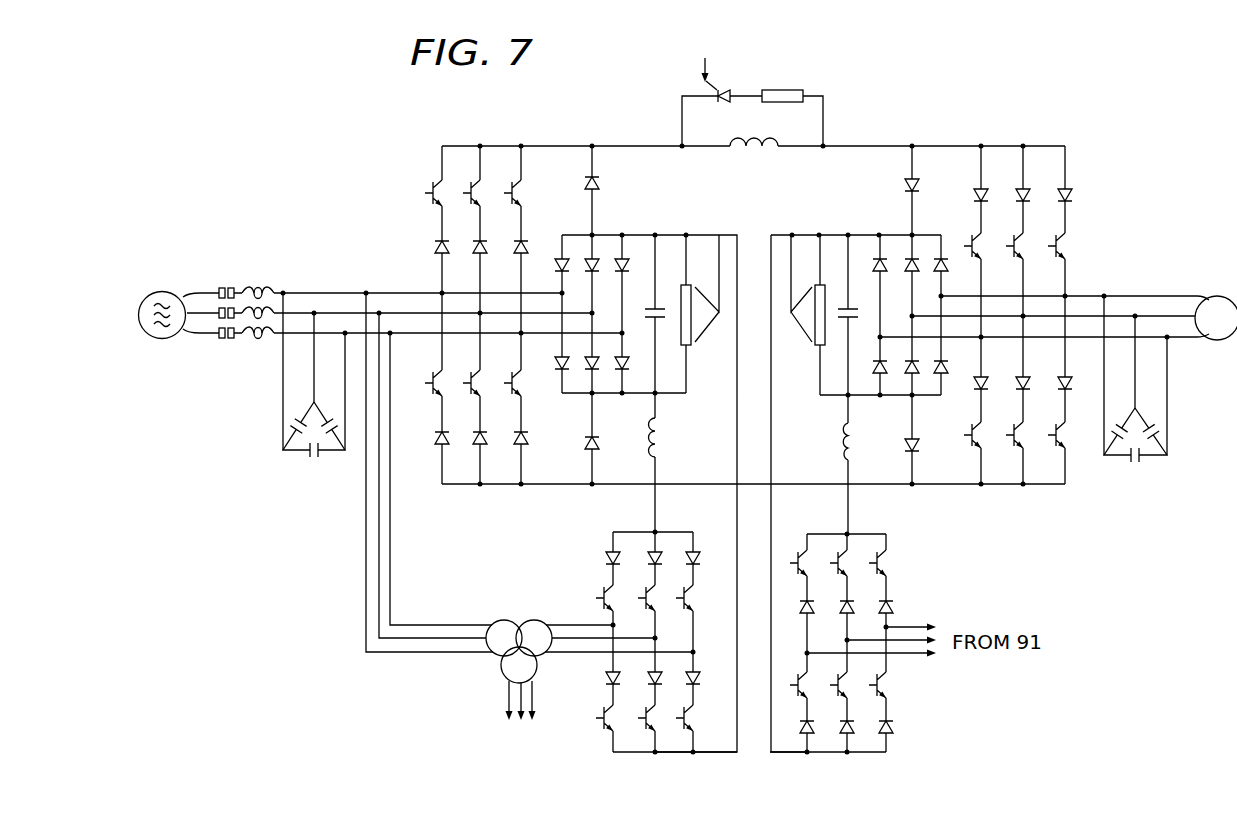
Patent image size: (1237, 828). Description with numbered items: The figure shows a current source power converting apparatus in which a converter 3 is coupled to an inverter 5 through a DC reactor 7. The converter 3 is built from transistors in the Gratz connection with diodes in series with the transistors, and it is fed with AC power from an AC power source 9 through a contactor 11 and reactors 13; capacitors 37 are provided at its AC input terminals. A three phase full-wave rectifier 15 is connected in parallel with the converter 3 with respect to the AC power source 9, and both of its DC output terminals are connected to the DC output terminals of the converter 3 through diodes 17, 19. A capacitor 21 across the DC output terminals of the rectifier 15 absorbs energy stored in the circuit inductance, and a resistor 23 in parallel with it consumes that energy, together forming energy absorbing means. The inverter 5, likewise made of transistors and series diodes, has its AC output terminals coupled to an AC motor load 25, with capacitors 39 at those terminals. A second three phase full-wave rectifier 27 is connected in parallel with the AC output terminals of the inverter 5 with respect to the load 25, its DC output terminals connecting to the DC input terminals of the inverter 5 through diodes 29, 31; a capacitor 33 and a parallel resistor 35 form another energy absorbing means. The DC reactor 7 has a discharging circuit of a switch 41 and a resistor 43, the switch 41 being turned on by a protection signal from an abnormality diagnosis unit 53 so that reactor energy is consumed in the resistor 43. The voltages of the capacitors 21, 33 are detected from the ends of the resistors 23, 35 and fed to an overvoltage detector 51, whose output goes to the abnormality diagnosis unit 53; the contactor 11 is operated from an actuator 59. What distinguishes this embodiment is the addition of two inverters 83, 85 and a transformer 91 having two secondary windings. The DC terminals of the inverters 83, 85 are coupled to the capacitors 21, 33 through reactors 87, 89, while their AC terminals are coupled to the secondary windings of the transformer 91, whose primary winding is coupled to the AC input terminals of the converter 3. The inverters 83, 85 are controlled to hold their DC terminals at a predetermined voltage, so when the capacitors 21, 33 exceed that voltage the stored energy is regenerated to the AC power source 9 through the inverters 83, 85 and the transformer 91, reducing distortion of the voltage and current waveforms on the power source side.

The converter 3 is at (469, 511).
The inverter 5 is at (1043, 519).
The DC reactor 7 is at (756, 151).
The AC power source 9 is at (161, 291).
The contactor 11 is at (228, 342).
The reactors 13 is at (258, 287).
The three phase full-wave rectifier 15 is at (570, 430).
The diode 17 is at (603, 183).
The diode 19 is at (600, 443).
The capacitor 21 is at (646, 312).
The resistor 23 is at (682, 337).
The load 25 is at (1217, 296).
The three phase full-wave rectifier 27 is at (894, 425).
The diode 29 is at (904, 185).
The diode 31 is at (918, 447).
The capacitor 33 is at (857, 311).
The resistor 35 is at (825, 339).
The capacitors 37 is at (297, 458).
The capacitors 39 is at (1145, 457).
The switch 41 is at (724, 103).
The resistor 43 is at (781, 92).
The overvoltage detector 51 is at (792, 222).
The abnormality diagnosis unit 53 is at (720, 48).
The actuator 59 is at (227, 278).
The additional inverter 83 is at (612, 527).
The additional inverter 85 is at (917, 525).
The reactor 87 is at (665, 440).
The reactor 89 is at (840, 442).
The transformer 91 is at (502, 620).